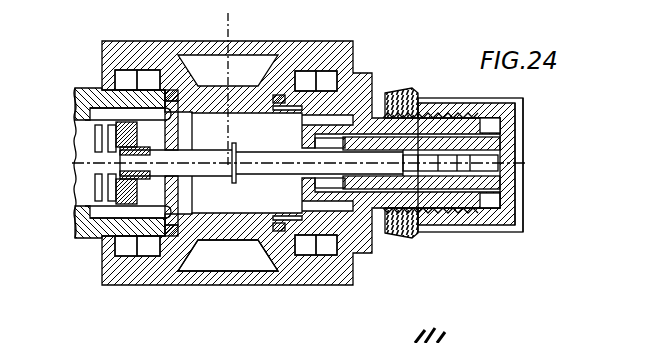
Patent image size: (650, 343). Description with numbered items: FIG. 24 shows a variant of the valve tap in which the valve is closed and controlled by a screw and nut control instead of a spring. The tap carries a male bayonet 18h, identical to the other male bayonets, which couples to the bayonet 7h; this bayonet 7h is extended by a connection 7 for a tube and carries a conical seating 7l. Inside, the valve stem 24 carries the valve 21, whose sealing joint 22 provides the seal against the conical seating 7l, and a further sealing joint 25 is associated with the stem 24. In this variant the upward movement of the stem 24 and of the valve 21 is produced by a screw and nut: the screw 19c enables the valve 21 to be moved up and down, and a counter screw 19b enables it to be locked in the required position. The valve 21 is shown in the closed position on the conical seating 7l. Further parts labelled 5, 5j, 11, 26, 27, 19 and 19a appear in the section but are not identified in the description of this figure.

The housing 5 is at (343, 52).
The housing center line / bore 5j is at (205, 128).
The connection 7 is at (102, 92).
The conical seating 7l is at (124, 130).
The bayonet 7h is at (147, 238).
The bearing 11 is at (150, 258).
The valve 21 is at (118, 183).
The sealing joint 22 is at (76, 222).
The valve stem 24 is at (207, 178).
The sealing joint 25 is at (313, 238).
The cavity 26 is at (228, 291).
The collar 27 is at (233, 183).
The male bayonet 18h is at (325, 285).
The adapter body 19 is at (432, 98).
The internal thread 19a is at (447, 222).
The counter screw 19b is at (400, 237).
The screw 19c is at (475, 222).